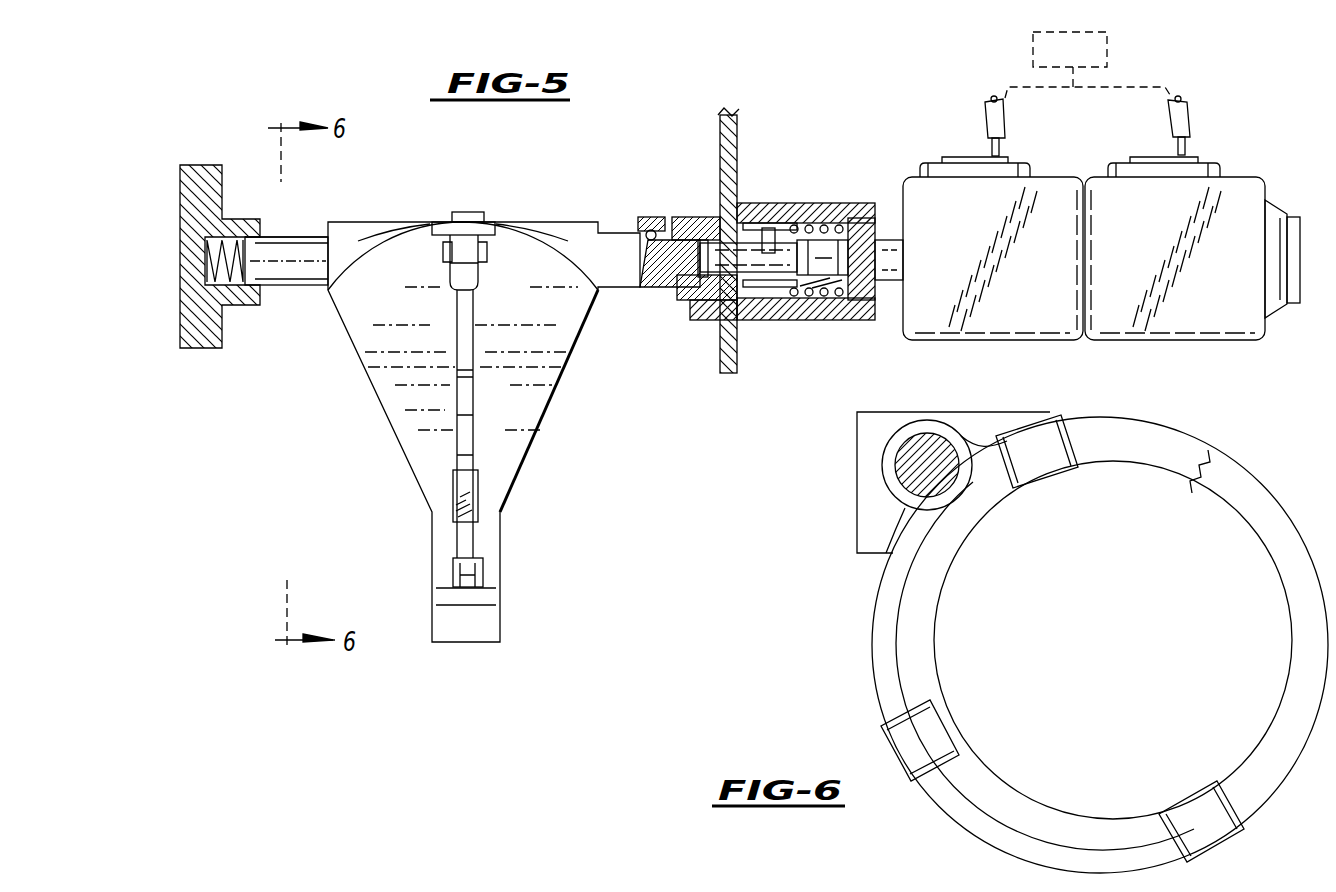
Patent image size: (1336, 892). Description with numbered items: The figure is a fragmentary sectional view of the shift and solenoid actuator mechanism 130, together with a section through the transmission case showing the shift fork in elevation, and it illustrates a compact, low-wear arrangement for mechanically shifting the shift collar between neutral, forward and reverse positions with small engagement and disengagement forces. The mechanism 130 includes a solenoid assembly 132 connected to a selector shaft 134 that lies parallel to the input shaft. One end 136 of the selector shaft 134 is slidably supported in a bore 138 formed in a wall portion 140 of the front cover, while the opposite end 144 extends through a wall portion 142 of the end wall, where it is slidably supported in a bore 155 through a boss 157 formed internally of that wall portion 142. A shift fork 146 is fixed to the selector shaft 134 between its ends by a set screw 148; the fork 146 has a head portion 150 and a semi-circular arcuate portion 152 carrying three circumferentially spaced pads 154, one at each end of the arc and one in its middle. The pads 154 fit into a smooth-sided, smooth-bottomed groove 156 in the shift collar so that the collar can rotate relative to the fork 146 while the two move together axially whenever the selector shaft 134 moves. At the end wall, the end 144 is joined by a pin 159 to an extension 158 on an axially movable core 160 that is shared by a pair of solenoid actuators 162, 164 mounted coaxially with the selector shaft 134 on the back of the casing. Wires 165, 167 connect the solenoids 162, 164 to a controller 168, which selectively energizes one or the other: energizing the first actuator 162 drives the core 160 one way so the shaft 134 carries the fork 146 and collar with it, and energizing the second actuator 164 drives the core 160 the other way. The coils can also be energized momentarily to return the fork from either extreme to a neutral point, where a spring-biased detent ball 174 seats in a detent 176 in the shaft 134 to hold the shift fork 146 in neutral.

In FIG. 5, the shift and solenoid actuator mechanism 130 is at (786, 190).
In FIG. 5, the solenoid assembly 132 is at (1068, 172).
In FIG. 5, the selector shaft 134 is at (633, 240).
In FIG. 6, the selector shaft 134 is at (905, 462).
In FIG. 5, the end of selector shaft 136 is at (258, 265).
In FIG. 5, the bore 138 is at (250, 243).
In FIG. 5, the wall portion 140 is at (208, 178).
In FIG. 5, the wall portion 142 is at (735, 140).
In FIG. 5, the opposite end of selector shaft 144 is at (713, 300).
In FIG. 5, the shift fork 146 is at (547, 432).
In FIG. 5, the set screw 148 is at (463, 212).
In FIG. 5, the head portion 150 is at (357, 243).
In FIG. 6, the head portion 150 is at (1008, 424).
In FIG. 5, the arcuate portion 152 is at (465, 397).
In FIG. 5, the pads 154 is at (472, 277).
In FIG. 6, the pads 154 is at (1040, 467).
In FIG. 5, the bore 155 is at (692, 237).
In FIG. 6, the groove 156 is at (1210, 452).
In FIG. 5, the boss 157 is at (698, 285).
In FIG. 5, the extension 158 is at (748, 262).
In FIG. 5, the pin 159 is at (775, 232).
In FIG. 5, the core 160 is at (852, 278).
In FIG. 5, the solenoid actuator 162 is at (995, 318).
In FIG. 5, the solenoid actuator 164 is at (1172, 323).
In FIG. 5, the wire 165 is at (985, 120).
In FIG. 5, the wire 167 is at (1185, 116).
In FIG. 5, the controller 168 is at (1107, 64).
In FIG. 5, the detent ball 174 is at (634, 255).
In FIG. 5, the detent 176 is at (660, 226).